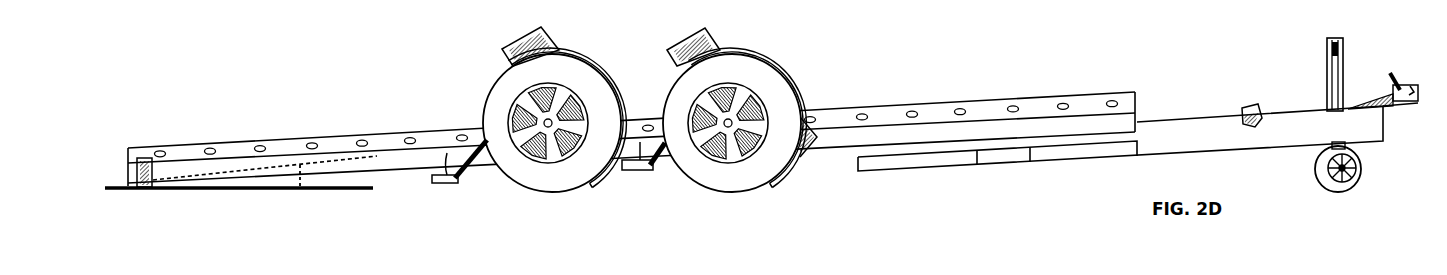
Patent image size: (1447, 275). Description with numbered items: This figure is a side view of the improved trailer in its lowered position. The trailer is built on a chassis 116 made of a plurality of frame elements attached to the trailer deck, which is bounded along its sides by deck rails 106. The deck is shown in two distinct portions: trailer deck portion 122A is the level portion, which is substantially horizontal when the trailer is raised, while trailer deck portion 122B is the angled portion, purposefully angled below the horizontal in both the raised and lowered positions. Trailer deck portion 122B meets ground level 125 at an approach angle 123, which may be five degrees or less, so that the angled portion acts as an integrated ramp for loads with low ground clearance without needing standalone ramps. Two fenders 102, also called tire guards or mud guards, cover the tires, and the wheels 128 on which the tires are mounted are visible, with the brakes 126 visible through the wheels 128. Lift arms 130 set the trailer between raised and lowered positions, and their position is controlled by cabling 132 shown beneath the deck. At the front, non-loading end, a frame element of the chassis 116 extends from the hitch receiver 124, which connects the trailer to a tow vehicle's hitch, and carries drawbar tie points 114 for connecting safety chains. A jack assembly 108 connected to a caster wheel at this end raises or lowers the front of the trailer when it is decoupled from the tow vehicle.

The fenders 102 is at (583, 62).
The deck rails 106 is at (890, 110).
The jack assembly 108 is at (1335, 40).
The drawbar tie points 114 is at (1253, 108).
The chassis 116 is at (1163, 155).
The trailer deck portion 122A is at (398, 152).
The trailer deck portion 122B is at (223, 172).
The approach angle 123 is at (303, 172).
The hitch receiver 124 is at (1403, 92).
The ground level 125 is at (303, 176).
The brakes 126 is at (522, 92).
The wheels 128 is at (522, 105).
The lift arms 130 is at (532, 40).
The cabling 132 is at (480, 148).